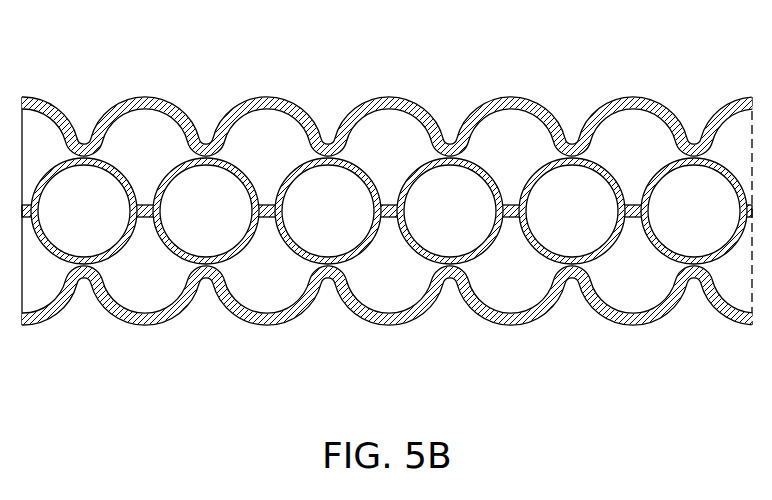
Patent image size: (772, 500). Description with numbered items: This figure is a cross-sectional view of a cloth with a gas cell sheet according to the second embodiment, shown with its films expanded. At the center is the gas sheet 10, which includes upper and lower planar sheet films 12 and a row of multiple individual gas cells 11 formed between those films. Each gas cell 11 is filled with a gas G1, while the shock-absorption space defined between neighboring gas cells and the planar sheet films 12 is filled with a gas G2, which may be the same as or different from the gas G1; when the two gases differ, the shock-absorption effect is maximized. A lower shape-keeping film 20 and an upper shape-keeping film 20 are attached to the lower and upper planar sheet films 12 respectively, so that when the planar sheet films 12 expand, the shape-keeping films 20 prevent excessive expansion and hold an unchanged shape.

The gas sheet 10 is at (355, 326).
The gas cell 11 is at (366, 162).
The planar sheet film 12 is at (274, 98).
The shape-keeping film 20 is at (149, 97).
The gas filled in the gas cell G1 is at (548, 230).
The gas filled into the shock-absorption space G2 is at (513, 135).